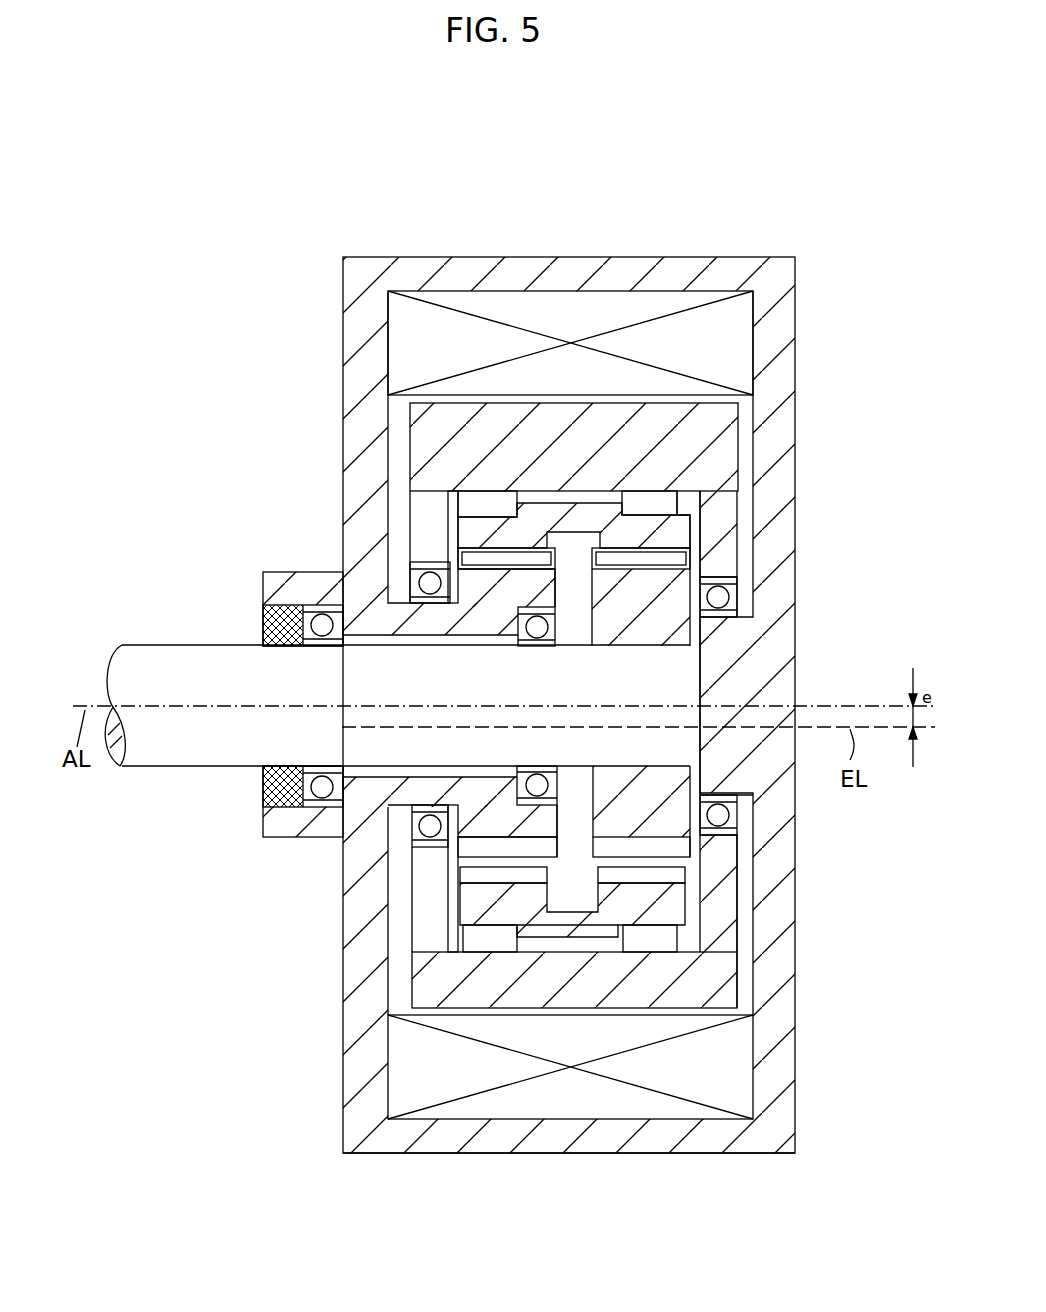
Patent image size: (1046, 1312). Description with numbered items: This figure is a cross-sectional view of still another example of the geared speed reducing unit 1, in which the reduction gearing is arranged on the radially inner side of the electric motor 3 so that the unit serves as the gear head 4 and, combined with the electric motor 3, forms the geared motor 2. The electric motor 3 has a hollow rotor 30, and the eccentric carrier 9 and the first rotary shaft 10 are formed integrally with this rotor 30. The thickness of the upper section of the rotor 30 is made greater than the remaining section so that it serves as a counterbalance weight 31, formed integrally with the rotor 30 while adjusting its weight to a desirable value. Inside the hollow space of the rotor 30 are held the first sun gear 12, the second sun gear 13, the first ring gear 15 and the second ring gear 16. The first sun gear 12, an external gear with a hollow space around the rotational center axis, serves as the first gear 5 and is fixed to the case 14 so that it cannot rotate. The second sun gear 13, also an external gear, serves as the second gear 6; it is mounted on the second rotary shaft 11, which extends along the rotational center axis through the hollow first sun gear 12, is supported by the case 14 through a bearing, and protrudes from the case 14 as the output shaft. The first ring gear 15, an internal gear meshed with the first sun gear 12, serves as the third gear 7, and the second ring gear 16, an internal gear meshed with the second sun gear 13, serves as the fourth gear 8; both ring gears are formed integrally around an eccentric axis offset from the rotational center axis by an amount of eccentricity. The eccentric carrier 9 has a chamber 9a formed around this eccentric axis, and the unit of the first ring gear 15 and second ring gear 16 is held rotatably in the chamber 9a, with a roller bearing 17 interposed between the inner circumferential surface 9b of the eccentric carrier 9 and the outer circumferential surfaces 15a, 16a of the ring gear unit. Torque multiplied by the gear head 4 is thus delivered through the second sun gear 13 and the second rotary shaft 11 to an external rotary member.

The geared speed reducing unit 1 is at (218, 342).
The geared motor 2 is at (707, 218).
The electric motor 3 is at (748, 433).
The counterbalance weight 31 is at (630, 422).
The eccentric carrier 9 is at (574, 408).
The first rotary shaft 10 is at (574, 408).
The rotor 30 is at (491, 437).
The gear head 4 is at (402, 913).
The case 14 is at (443, 1137).
The outer circumferential surface 16a is at (678, 967).
The roller bearing 17 is at (495, 963).
The outer circumferential surface 15a is at (490, 942).
The chamber 9a is at (690, 912).
The inner circumferential surface 9b is at (557, 940).
The third gear 7 is at (473, 674).
The first ring gear 15 is at (470, 552).
The fourth gear 8 is at (664, 547).
The second ring gear 16 is at (668, 533).
The second gear 6 is at (645, 721).
The second sun gear 13 is at (645, 607).
The first gear 5 is at (336, 704).
The first sun gear 12 is at (485, 593).
The second rotary shaft 11 is at (193, 747).